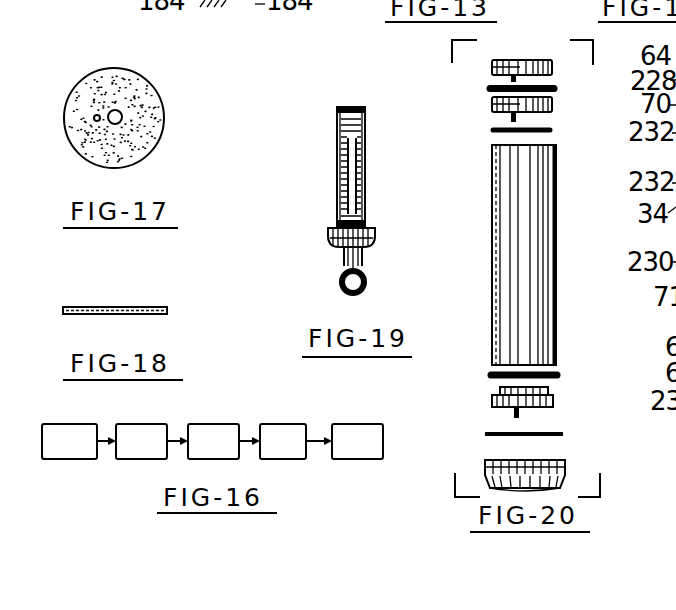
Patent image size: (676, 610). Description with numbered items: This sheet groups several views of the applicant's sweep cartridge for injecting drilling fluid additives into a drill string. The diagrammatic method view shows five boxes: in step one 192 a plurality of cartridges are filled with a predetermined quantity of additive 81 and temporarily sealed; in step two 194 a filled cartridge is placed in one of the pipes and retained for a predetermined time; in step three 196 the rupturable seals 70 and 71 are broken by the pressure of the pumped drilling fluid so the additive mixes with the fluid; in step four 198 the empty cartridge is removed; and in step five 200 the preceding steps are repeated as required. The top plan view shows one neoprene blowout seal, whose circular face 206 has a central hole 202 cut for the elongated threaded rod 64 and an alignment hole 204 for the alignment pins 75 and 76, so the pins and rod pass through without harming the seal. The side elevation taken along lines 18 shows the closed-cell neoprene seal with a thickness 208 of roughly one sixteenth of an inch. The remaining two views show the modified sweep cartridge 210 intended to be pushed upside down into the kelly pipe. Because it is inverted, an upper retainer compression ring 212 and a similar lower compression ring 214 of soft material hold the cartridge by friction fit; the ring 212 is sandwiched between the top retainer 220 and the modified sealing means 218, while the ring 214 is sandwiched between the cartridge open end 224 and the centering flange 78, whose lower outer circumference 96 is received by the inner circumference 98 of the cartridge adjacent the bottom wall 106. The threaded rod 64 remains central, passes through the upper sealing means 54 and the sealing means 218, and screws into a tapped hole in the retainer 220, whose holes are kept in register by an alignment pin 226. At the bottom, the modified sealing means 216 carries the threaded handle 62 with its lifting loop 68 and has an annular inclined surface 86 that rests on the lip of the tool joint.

In FIG. 17, the section line 18 is at (60, 178).
In FIG. 20, the upper sealing means 54 is at (493, 206).
In FIG. 19, the threaded handle 62 is at (363, 257).
In FIG. 19, the threaded rod 64 is at (366, 168).
In FIG. 19, the lifting loop 68 is at (340, 285).
In FIG. 17, the rupturable blowout seal 70 is at (96, 114).
In FIG. 18, the rupturable blowout seal 70 is at (127, 307).
In FIG. 20, the rupturable blowout seal 70 is at (490, 130).
In FIG. 20, the rupturable blowout seal 71 is at (485, 433).
In FIG. 20, the alignment pin 75 is at (518, 414).
In FIG. 20, the alignment pin 76 is at (516, 118).
In FIG. 20, the centering flange 78 is at (492, 400).
In FIG. 19, the drilling fluid additive 81 is at (366, 194).
In FIG. 19, the annular inclined surface 86 is at (334, 246).
In FIG. 20, the annular inclined surface 86 is at (600, 485).
In FIG. 20, the outer circumference 96 is at (492, 386).
In FIG. 20, the inner circumference 98 is at (498, 178).
In FIG. 20, the bottom wall 106 is at (530, 156).
In FIG. 16, the step one 192 is at (69, 441).
In FIG. 16, the step two 194 is at (141, 441).
In FIG. 16, the step three 196 is at (213, 441).
In FIG. 16, the step four 198 is at (283, 441).
In FIG. 16, the step five 200 is at (357, 441).
In FIG. 17, the central hole 202 is at (122, 111).
In FIG. 17, the alignment hole 204 is at (95, 114).
In FIG. 17, the circular face 206 is at (150, 100).
In FIG. 18, the seal thickness 208 is at (197, 307).
In FIG. 19, the modified sweep cartridge 210 is at (331, 176).
In FIG. 20, the modified sweep cartridge 210 is at (526, 234).
In FIG. 19, the upper retainer compression ring 212 is at (337, 113).
In FIG. 20, the upper retainer compression ring 212 is at (557, 88).
In FIG. 19, the lower compression ring 214 is at (337, 222).
In FIG. 20, the lower compression ring 214 is at (560, 376).
In FIG. 19, the modified sealing means 216 is at (328, 237).
In FIG. 20, the modified sealing means 216 is at (560, 465).
In FIG. 19, the modified sealing means 218 is at (366, 118).
In FIG. 20, the modified sealing means 218 is at (492, 105).
In FIG. 19, the retainer 220 is at (337, 108).
In FIG. 20, the retainer 220 is at (538, 60).
In FIG. 20, the sweep cartridge open end 224 is at (557, 366).
In FIG. 20, the alignment pin 226 is at (512, 80).